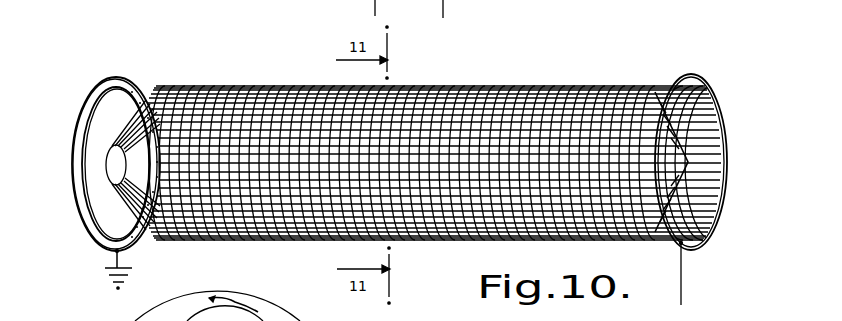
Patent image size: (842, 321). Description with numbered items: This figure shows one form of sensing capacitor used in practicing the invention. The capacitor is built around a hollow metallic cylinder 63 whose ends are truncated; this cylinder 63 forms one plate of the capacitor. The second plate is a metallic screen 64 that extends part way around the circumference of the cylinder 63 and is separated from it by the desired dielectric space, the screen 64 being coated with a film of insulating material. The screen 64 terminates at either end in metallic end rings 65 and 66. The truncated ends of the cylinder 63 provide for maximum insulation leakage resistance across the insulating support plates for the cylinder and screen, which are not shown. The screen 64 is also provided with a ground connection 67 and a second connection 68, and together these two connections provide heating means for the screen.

The hollow metallic cylinder 63 is at (118, 188).
The metallic screen 64 is at (248, 241).
The metallic end ring 65 is at (92, 232).
The metallic end ring 66 is at (703, 241).
The ground connection 67 is at (105, 270).
The second connection 68 is at (681, 280).